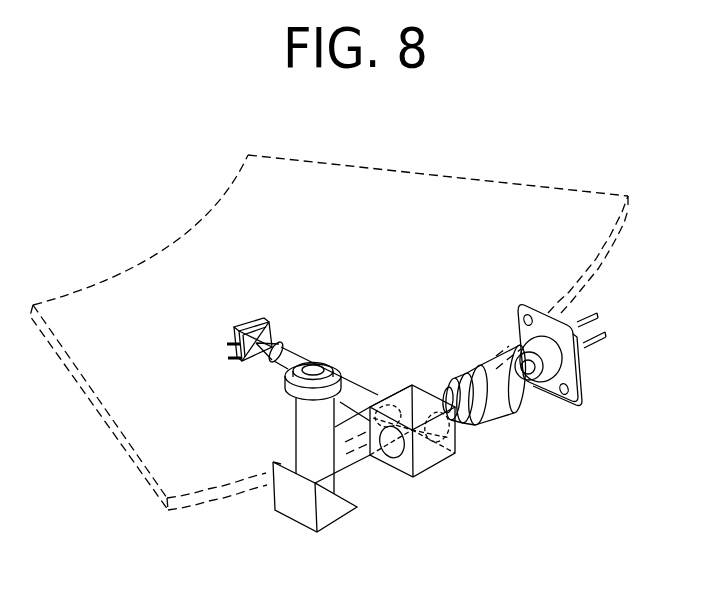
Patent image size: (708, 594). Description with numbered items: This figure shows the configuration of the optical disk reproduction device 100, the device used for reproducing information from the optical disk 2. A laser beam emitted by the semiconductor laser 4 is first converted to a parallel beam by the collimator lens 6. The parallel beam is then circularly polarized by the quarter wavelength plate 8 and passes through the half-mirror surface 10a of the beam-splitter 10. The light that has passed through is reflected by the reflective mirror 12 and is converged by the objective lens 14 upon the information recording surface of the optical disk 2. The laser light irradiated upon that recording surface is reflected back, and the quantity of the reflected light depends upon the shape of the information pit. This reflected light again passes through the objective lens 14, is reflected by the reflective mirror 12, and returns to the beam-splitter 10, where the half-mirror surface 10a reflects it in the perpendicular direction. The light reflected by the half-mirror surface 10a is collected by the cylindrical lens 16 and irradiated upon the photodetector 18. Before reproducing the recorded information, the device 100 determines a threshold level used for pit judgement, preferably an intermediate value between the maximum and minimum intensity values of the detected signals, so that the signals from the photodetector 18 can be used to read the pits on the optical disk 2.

The optical disk reproduction device 100 is at (439, 119).
The optical disk 2 is at (127, 452).
The semiconductor laser 4 is at (568, 385).
The collimator lens 6 is at (513, 406).
The quarter wavelength plate 8 is at (476, 427).
The beam-splitter 10 is at (448, 462).
The half-mirror surface 10a is at (425, 393).
The reflective mirror 12 is at (293, 512).
The objective lens 14 is at (289, 408).
The cylindrical lens 16 is at (280, 349).
The photodetector 18 is at (243, 318).